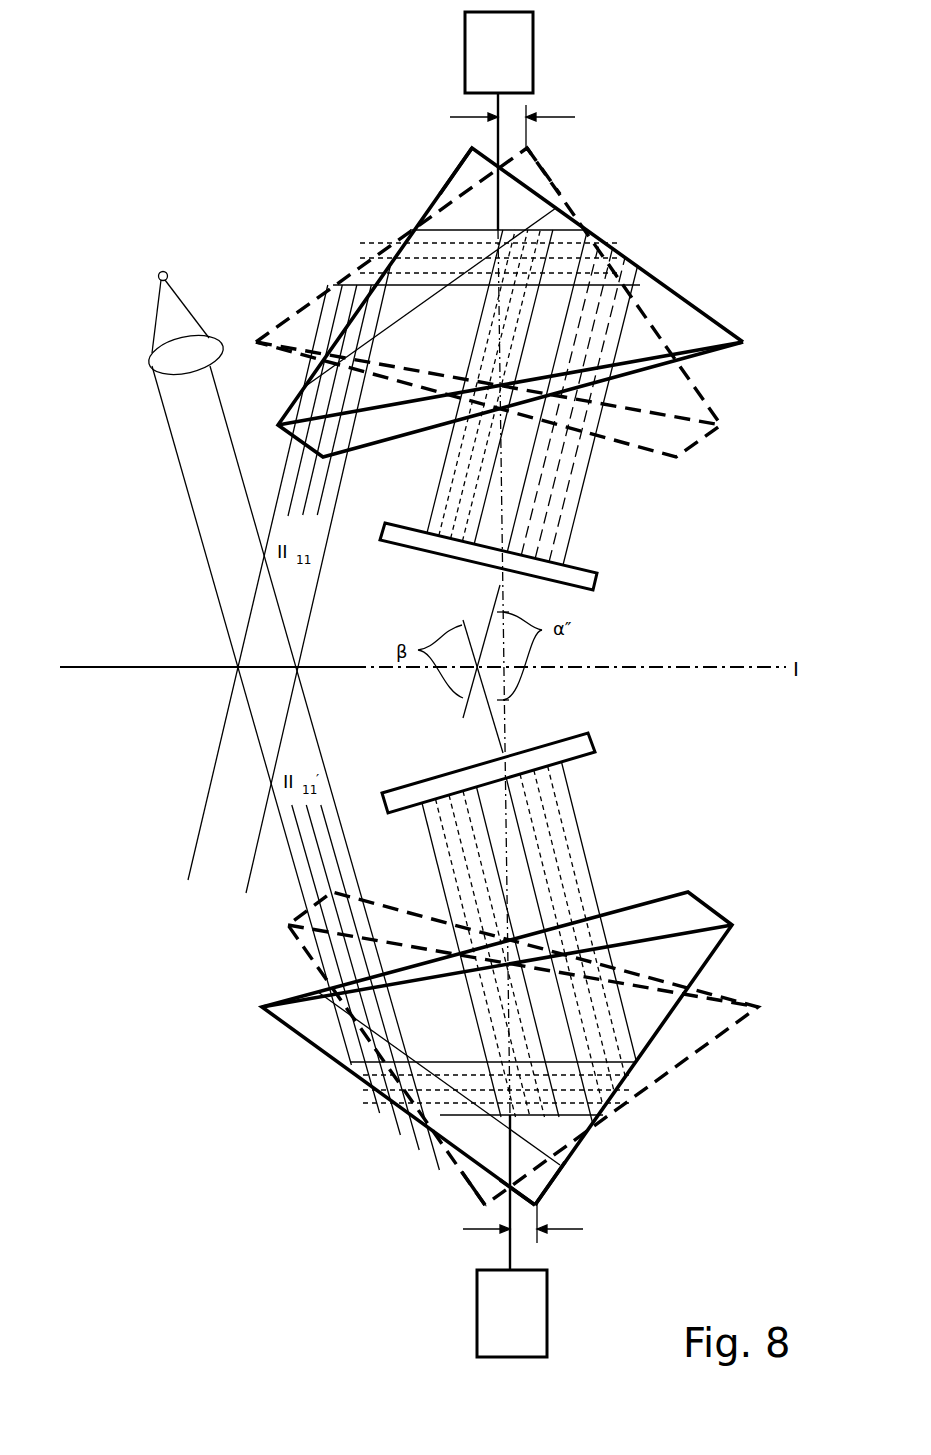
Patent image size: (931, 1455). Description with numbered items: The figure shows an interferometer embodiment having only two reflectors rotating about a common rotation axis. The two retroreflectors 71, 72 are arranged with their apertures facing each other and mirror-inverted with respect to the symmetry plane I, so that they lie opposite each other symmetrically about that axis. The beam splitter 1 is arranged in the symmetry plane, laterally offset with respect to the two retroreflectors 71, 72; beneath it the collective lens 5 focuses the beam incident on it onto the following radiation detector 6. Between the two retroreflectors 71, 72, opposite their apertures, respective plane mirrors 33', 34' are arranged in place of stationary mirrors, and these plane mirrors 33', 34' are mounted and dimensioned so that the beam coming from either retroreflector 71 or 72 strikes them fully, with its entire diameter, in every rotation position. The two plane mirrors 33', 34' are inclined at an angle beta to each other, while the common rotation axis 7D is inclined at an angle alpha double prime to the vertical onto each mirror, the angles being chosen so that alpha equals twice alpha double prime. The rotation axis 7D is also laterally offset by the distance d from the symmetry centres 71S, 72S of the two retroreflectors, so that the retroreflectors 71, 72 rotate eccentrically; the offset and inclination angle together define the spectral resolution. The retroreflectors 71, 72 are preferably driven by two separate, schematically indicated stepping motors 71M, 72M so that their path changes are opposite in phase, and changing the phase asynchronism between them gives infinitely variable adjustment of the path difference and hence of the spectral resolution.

The beam splitter 1 is at (108, 667).
The collective lens 5 is at (149, 364).
The radiation detector 6 is at (158, 276).
The rotation axis 7D is at (494, 107).
The plane mirror 33' is at (533, 556).
The plane mirror 34' is at (522, 753).
The retroreflector 71 is at (692, 337).
The stepping motor 71M is at (533, 40).
The symmetry centre 71S is at (468, 142).
The retroreflector 72 is at (730, 927).
The stepping motor 72M is at (528, 1327).
The symmetry centre 72S is at (483, 1203).